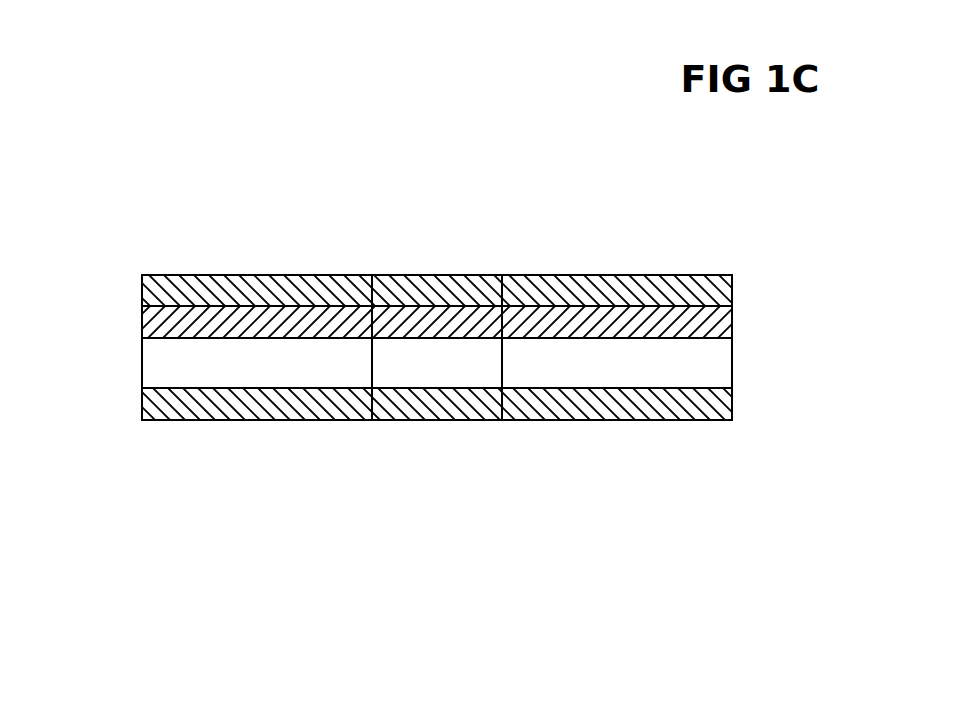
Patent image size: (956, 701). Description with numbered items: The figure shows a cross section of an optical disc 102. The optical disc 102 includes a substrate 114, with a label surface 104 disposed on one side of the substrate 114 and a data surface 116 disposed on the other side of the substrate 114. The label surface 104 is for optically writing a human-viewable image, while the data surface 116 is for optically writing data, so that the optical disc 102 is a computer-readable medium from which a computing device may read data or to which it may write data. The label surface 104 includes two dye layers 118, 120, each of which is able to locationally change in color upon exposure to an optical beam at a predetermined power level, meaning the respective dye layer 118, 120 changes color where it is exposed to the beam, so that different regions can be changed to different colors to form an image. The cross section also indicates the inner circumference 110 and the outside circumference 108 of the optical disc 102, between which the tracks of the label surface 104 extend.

The optical disc 102 is at (403, 533).
The label surface 104 is at (740, 275).
The outside circumference 108 is at (141, 258).
The inner circumference 110 is at (502, 468).
The substrate 114 is at (156, 372).
The data surface 116 is at (150, 406).
The dye layer 118 is at (149, 330).
The dye layer 120 is at (145, 288).